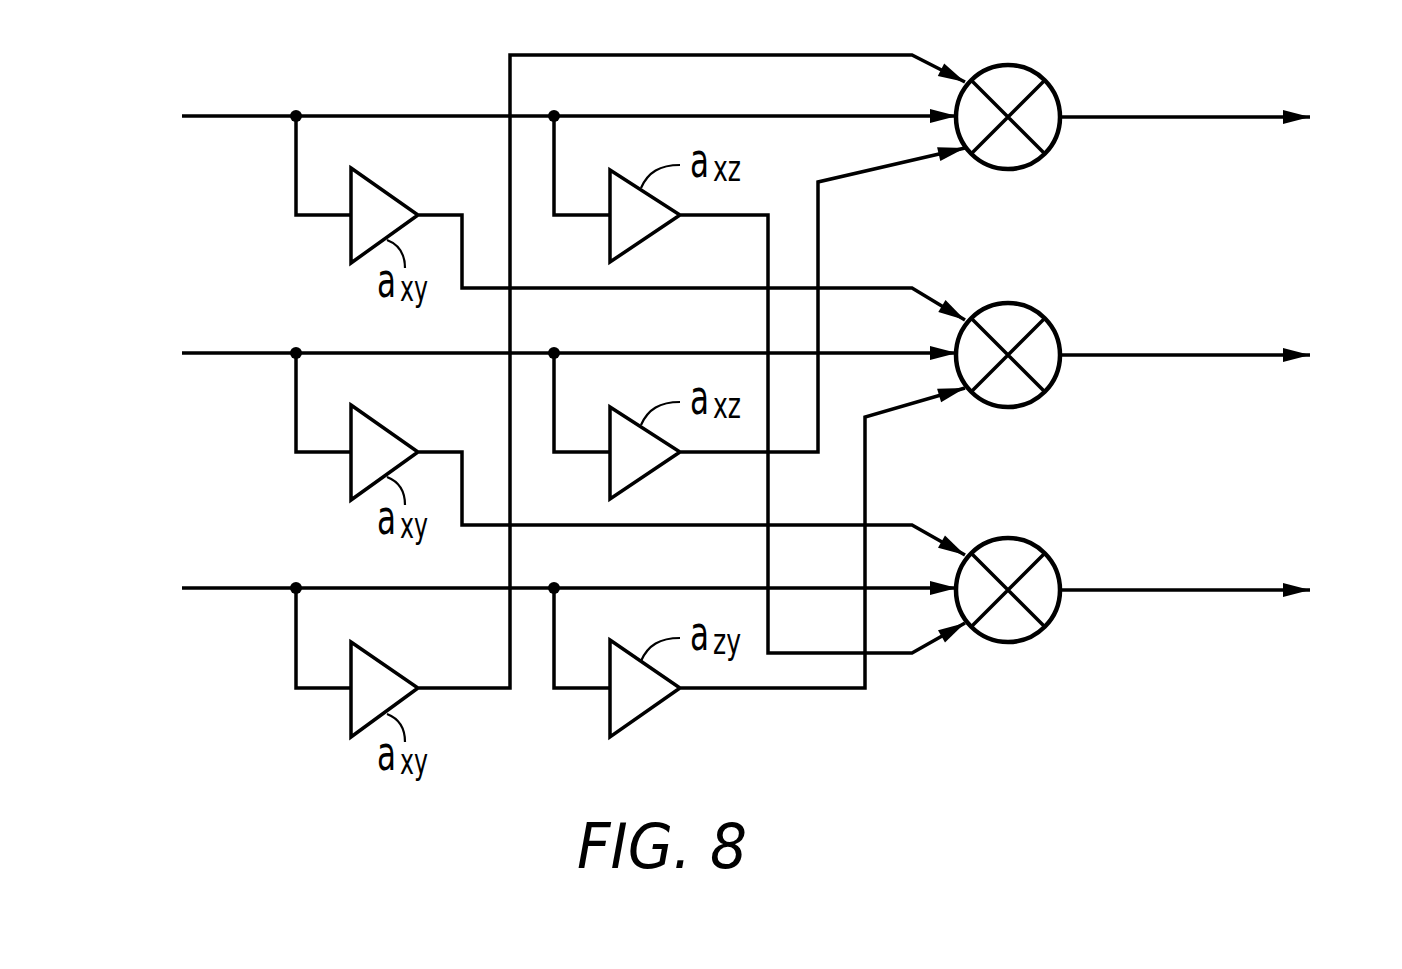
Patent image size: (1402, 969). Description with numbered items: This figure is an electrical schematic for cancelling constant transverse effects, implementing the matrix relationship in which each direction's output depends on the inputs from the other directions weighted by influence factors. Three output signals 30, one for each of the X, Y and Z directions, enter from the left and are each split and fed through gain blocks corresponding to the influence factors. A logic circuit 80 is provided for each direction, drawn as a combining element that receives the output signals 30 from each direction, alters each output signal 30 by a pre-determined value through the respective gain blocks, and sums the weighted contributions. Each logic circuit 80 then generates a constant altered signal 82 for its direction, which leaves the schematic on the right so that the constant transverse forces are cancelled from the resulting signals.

The output signal 30 is at (529, 353).
The logic circuit 80 is at (1027, 66).
The constant altered signal 82 is at (1223, 354).